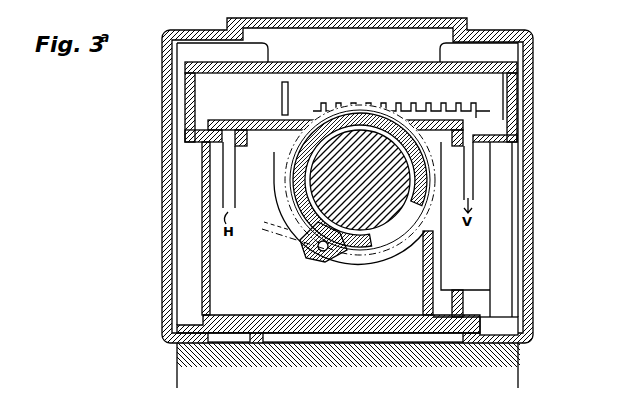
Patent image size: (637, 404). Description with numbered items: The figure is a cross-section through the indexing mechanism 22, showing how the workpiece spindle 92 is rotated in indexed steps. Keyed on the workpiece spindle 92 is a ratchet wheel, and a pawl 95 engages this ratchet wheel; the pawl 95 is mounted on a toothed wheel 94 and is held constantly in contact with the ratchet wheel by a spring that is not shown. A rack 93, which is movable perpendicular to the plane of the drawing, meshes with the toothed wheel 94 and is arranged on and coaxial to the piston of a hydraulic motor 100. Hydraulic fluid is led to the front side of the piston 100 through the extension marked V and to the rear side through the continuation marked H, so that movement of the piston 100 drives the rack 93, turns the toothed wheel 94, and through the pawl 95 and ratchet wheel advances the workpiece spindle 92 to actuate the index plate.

The indexing mechanism 22 is at (528, 181).
The workpiece spindle 92 is at (358, 218).
The rack 93 is at (453, 107).
The toothed wheel 94 is at (274, 153).
The pawl 95 is at (274, 240).
The piston of hydraulic motor 100 is at (300, 88).